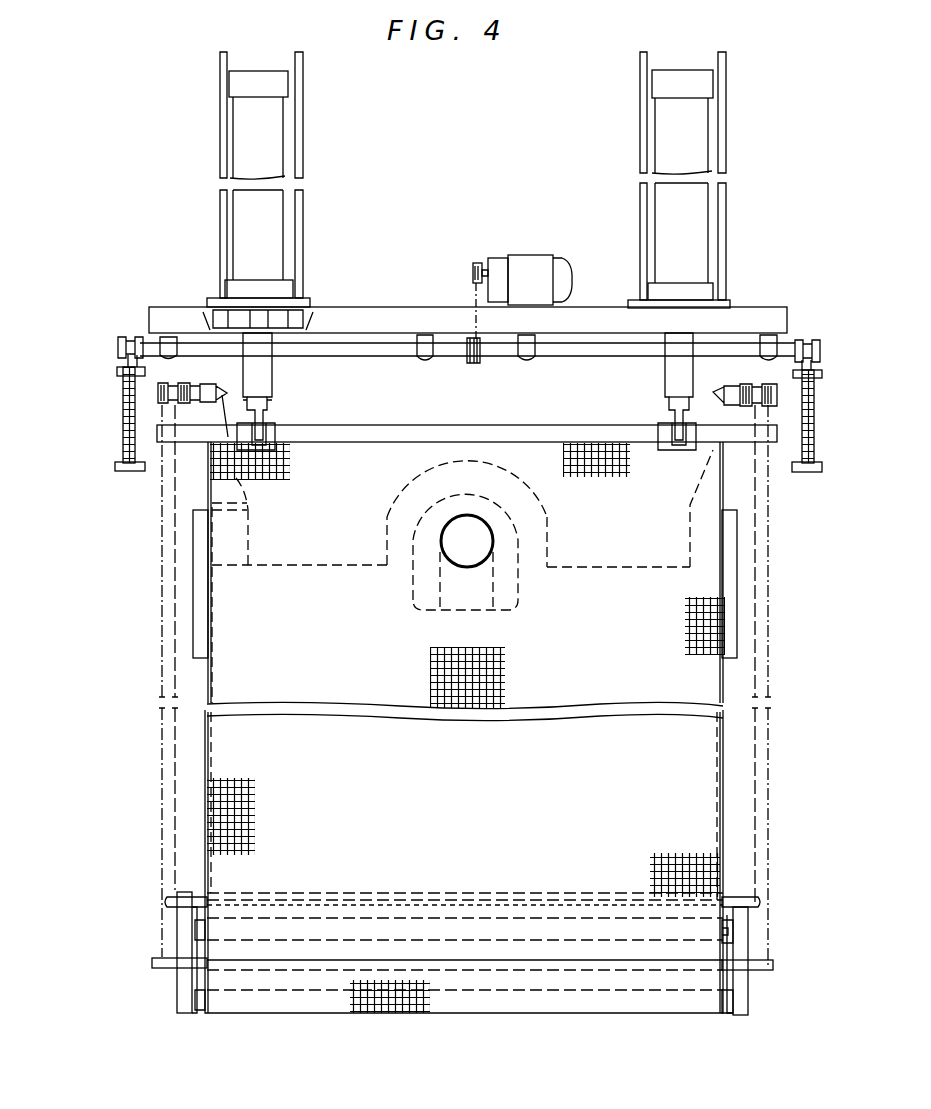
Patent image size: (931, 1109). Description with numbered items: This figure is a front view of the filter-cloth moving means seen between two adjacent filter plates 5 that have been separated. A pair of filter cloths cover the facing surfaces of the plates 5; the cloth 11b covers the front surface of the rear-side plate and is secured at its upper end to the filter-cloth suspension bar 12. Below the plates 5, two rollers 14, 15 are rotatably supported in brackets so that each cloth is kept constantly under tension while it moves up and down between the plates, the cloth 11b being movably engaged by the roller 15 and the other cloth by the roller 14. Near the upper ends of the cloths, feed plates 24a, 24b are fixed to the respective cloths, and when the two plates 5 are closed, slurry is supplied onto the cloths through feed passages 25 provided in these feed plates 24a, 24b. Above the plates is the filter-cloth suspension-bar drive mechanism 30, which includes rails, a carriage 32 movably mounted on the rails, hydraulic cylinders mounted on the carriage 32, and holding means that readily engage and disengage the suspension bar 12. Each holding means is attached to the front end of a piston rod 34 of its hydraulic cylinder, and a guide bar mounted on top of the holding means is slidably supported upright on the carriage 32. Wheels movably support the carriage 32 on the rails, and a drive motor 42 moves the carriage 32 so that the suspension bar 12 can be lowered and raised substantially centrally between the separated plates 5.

The filter plate 5 is at (634, 565).
The filter cloth 11b is at (715, 815).
The filter-cloth suspension bar 12 is at (411, 435).
The roller 14 is at (745, 925).
The roller 15 is at (725, 1015).
The feed plate 24a is at (413, 505).
The feed plate 24b is at (413, 538).
The feed passage 25 is at (473, 550).
The filter-cloth suspension-bar drive mechanism 30 is at (492, 151).
The carriage 32 is at (381, 318).
The piston rod 34 is at (262, 312).
The drive motor 42 is at (530, 270).